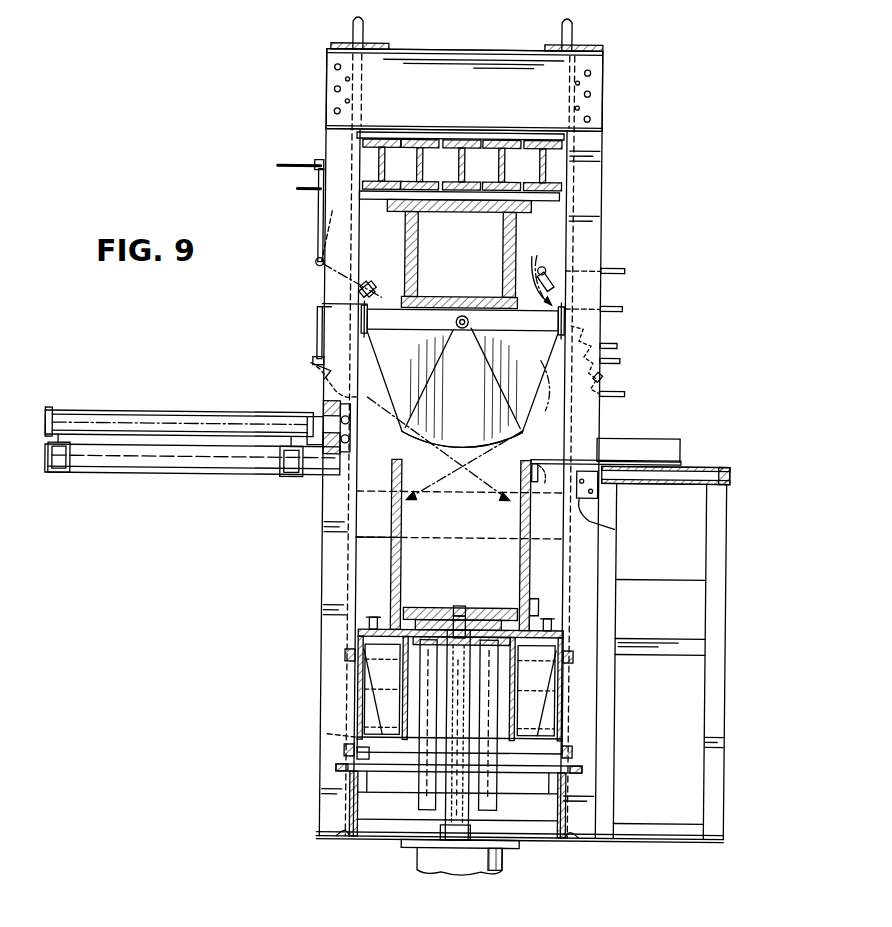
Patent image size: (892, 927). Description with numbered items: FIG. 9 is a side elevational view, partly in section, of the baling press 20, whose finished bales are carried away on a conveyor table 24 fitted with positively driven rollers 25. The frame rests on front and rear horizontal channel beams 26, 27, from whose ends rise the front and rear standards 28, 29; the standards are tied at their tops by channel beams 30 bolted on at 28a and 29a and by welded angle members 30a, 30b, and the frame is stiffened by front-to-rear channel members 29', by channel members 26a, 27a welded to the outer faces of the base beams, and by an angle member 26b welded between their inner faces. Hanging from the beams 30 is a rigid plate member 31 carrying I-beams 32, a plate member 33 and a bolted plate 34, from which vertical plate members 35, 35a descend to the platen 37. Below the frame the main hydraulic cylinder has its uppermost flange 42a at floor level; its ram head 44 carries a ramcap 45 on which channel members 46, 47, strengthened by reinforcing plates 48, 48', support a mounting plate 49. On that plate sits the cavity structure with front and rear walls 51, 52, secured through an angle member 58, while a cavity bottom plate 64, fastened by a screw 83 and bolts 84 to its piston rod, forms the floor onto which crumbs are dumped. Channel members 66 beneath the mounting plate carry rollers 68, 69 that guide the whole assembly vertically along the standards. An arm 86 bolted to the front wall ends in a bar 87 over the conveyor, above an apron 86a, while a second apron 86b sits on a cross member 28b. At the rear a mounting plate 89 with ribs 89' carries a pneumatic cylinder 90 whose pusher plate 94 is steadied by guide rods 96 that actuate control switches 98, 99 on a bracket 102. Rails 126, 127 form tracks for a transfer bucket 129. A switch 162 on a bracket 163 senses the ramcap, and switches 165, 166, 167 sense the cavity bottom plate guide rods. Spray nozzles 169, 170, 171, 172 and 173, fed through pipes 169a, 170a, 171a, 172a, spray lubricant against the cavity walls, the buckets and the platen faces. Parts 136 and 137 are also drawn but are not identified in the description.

The baling press 20 is at (250, 330).
The conveyor table 24 is at (705, 578).
The positively driven rollers 25 is at (703, 472).
The front horizontal channel beam 26 is at (527, 812).
The channel member 26a is at (570, 800).
The angle member 26b is at (533, 845).
The rear horizontal channel beam 27 is at (361, 838).
The channel member 27a is at (352, 800).
The front standards 28 is at (600, 208).
The bolted connection 28a is at (587, 93).
The frame cross member 28b is at (615, 528).
The rear standards 29 is at (316, 444).
The bolted connection 29a is at (331, 90).
The front to rear channel members 29' is at (376, 560).
The channel beams 30 is at (438, 72).
The welded angle members 30a is at (570, 30).
The welded angle members 30b is at (349, 30).
The rigid plate member 31 is at (562, 137).
The I-beams 32 is at (403, 150).
The plate member 33 is at (380, 199).
The plate 34 is at (440, 212).
The vertical plate member 35 is at (500, 251).
The vertical plate member 35a is at (483, 198).
The platen 37 is at (480, 291).
The uppermost flange 42a is at (410, 848).
The enlarged head 44 is at (410, 760).
The ramcap 45 is at (540, 745).
The channel member 46 is at (518, 684).
The channel member 47 is at (404, 668).
The reinforcing plate 48 is at (588, 694).
The reinforcing plate 48' is at (334, 691).
The mounting plate 49 is at (567, 633).
The front wall 51 is at (520, 519).
The rear wall 52 is at (402, 570).
The angle member 58 is at (536, 598).
The cavity bottom plate 64 is at (503, 608).
The channel members 66 is at (360, 748).
The roller 68 is at (576, 656).
The roller 69 is at (346, 656).
The screw 83 is at (463, 608).
The bolts 84 is at (440, 608).
The arm 86 is at (540, 460).
The apron 86a is at (540, 482).
The apron 86b is at (600, 492).
The plate member 87 is at (660, 446).
The mounting plate 89 is at (322, 380).
The longitudinal ribs 89' is at (304, 448).
The pneumatic cylinder 90 is at (140, 415).
The pusher plate 94 is at (335, 443).
The guide rods 96 is at (186, 420).
The control switch 98 is at (288, 466).
The control switch 99 is at (60, 470).
The bracket 102 is at (135, 474).
The rail 126 is at (543, 410).
The rail 127 is at (330, 305).
The transfer bucket 129 is at (533, 423).
The pivot bar 136 is at (432, 360).
The sector arm 137 is at (488, 372).
The switch 162 is at (330, 740).
The bracket 163 is at (360, 708).
The switch 165 is at (490, 810).
The switch 166 is at (486, 672).
The switch 167 is at (459, 862).
The spray nozzle 169 is at (605, 380).
The pipe 169a is at (620, 360).
The spray nozzle 170 is at (318, 340).
The pipe 170a is at (320, 318).
The spray nozzle 171 is at (547, 271).
The pipe 171a is at (612, 266).
The spray nozzle 172 is at (370, 283).
The pipe 172a is at (316, 225).
The spray nozzle 173 is at (580, 330).